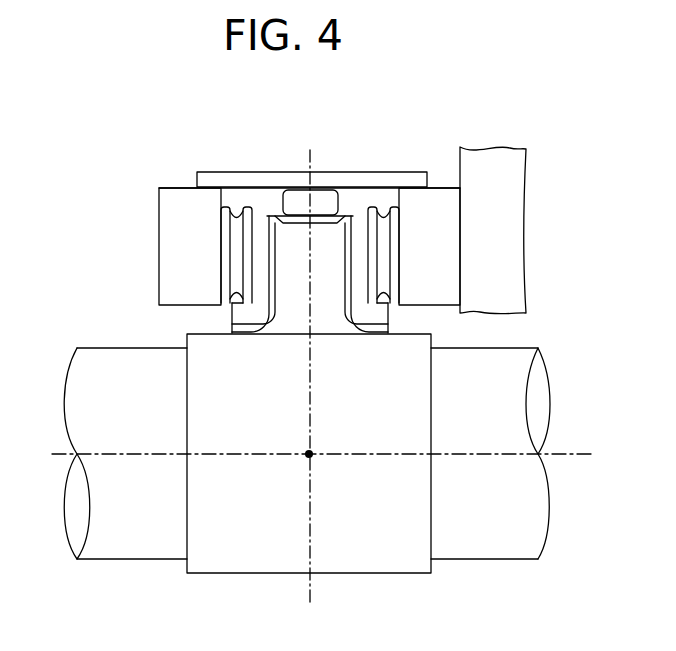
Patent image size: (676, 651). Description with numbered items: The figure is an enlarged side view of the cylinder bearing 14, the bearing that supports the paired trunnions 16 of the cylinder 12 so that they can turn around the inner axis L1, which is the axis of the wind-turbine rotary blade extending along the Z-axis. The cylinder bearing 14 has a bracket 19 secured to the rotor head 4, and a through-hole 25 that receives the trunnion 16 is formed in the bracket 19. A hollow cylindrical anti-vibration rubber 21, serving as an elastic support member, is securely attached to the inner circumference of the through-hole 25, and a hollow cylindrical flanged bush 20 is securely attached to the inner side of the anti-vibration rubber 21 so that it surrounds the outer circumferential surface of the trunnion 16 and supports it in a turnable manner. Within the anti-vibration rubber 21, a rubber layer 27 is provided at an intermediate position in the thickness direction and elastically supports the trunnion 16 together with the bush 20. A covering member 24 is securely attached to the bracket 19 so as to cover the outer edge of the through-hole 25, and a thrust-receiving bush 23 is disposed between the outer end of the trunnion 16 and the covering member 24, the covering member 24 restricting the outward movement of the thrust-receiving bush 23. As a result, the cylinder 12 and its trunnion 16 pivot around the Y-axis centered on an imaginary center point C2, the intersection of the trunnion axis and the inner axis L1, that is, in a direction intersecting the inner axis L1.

The rotor head 4 is at (459, 167).
The cylinder 12 is at (93, 345).
The cylinder bearing 14 is at (112, 237).
The trunnion 16 is at (288, 324).
The bracket 19 is at (176, 187).
The bush 20 is at (263, 213).
The anti-vibration rubber 21 is at (372, 212).
The thrust-receiving bush 23 is at (338, 202).
The covering member 24 is at (316, 170).
The through-hole 25 is at (237, 198).
The rubber layer 27 is at (385, 254).
The imaginary center point C2 is at (312, 458).
The inner axis L1 is at (310, 597).